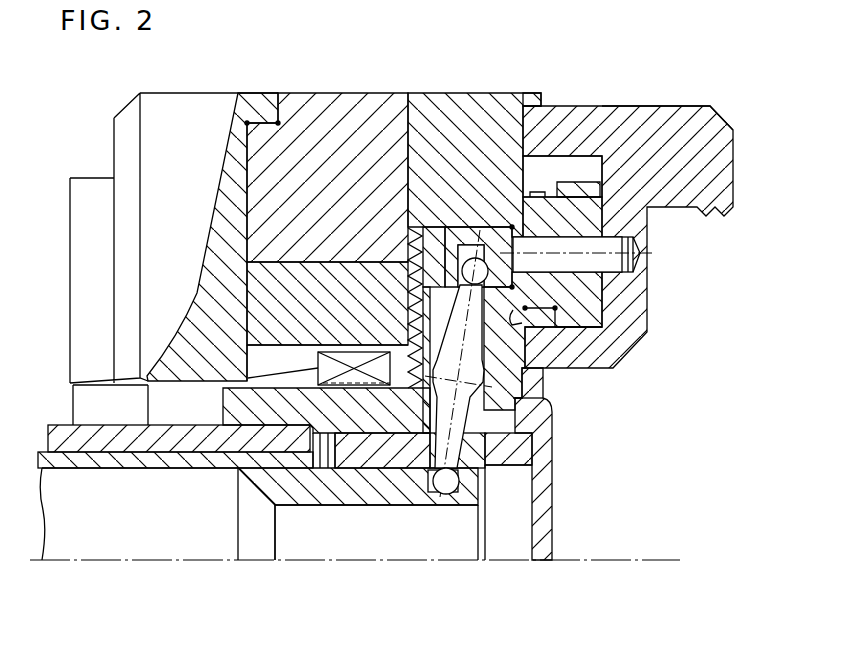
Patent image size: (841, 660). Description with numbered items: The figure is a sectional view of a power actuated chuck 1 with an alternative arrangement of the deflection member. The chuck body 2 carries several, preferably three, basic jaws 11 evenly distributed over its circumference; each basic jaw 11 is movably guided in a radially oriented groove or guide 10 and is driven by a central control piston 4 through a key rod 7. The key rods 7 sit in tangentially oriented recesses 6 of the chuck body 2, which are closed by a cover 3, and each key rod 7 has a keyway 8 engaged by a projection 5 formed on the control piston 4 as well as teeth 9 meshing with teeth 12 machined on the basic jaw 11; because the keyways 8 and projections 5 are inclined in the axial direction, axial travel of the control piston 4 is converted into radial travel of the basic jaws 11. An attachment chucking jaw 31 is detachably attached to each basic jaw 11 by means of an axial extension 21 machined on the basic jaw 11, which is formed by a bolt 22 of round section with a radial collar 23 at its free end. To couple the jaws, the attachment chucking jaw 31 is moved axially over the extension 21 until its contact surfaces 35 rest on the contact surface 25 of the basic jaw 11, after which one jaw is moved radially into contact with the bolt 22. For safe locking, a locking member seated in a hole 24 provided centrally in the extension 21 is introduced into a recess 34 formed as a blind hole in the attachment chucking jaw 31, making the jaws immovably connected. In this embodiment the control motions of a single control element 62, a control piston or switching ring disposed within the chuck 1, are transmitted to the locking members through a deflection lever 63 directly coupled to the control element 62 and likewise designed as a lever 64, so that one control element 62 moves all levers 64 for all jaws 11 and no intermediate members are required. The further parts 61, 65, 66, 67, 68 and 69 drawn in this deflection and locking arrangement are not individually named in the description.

The power actuated chuck 1 is at (295, 583).
The chuck body 2 is at (308, 115).
The cover 3 is at (246, 110).
The control piston 4 is at (333, 376).
The projections 5 is at (303, 322).
The recesses 6 is at (277, 262).
The key rods 7 is at (240, 440).
The keyway 8 is at (265, 372).
The teeth 9 is at (383, 258).
The guides 10 is at (530, 92).
The basic jaws 11 is at (430, 112).
The teeth 12 is at (343, 405).
The axial extension 21 is at (567, 177).
The bolt 22 is at (538, 207).
The collar 23 is at (630, 112).
The hole 24 is at (575, 265).
The contact surface 25 is at (545, 372).
The attachment chucking jaw 31 is at (678, 125).
The recess 34 is at (640, 253).
The contact surfaces 35 is at (525, 333).
The groove 61 is at (580, 290).
The control element 62 is at (380, 492).
The deflection lever 63 is at (470, 440).
The lever 64 is at (500, 372).
The ball 65 is at (452, 483).
The threaded sleeve 66 is at (440, 247).
The seat 67 is at (437, 490).
The socket 68 is at (463, 250).
The gap 69 is at (560, 372).